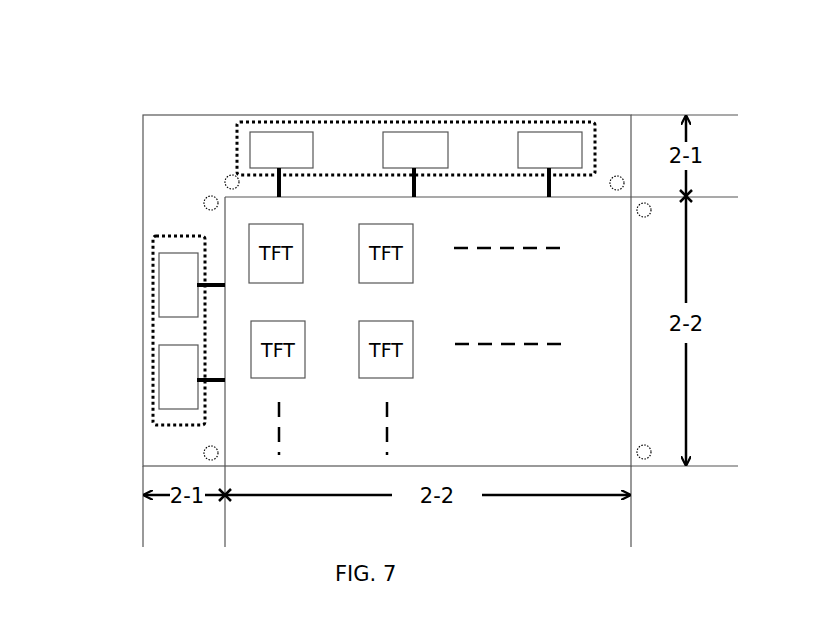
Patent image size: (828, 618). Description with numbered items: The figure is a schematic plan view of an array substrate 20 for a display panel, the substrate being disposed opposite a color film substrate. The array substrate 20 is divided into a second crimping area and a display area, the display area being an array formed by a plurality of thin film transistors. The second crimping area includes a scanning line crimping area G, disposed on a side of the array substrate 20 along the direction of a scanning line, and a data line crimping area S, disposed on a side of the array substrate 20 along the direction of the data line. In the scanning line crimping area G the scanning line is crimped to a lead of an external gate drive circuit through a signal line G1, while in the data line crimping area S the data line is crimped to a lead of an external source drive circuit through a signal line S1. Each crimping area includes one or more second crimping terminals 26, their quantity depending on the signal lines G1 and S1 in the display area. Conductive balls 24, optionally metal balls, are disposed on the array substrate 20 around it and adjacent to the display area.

The array substrate 20 is at (100, 89).
The conductive ball 24 is at (203, 448).
The second crimping terminal 26 is at (557, 142).
The data line crimping area S is at (253, 122).
The signal line S1 is at (415, 183).
The scanning line crimping area G is at (153, 330).
The signal line G1 is at (213, 285).